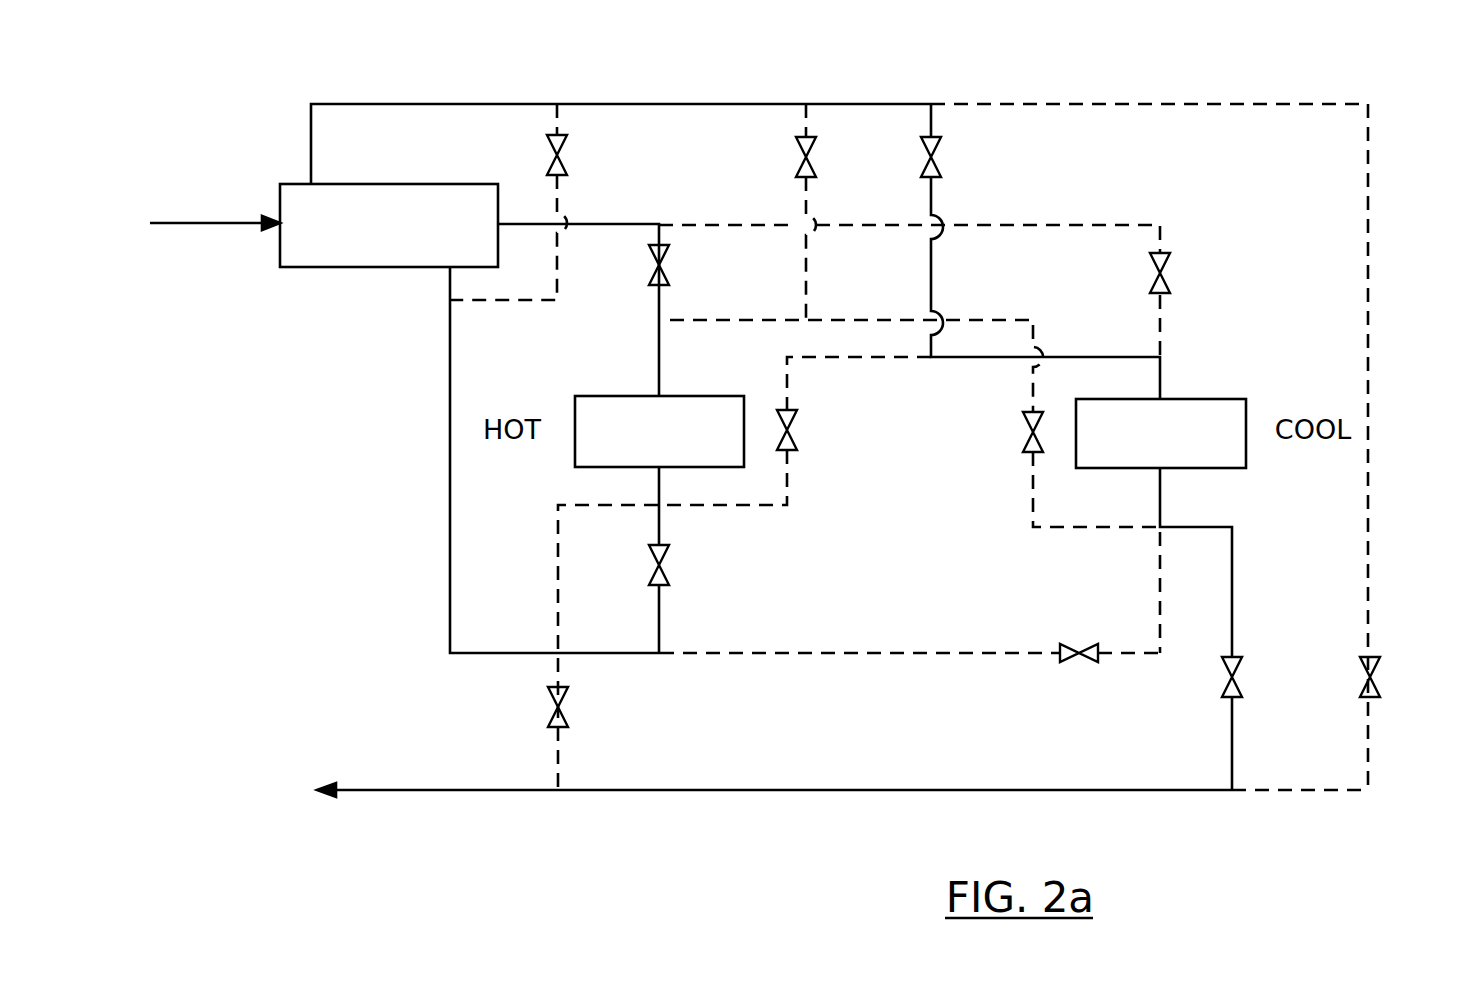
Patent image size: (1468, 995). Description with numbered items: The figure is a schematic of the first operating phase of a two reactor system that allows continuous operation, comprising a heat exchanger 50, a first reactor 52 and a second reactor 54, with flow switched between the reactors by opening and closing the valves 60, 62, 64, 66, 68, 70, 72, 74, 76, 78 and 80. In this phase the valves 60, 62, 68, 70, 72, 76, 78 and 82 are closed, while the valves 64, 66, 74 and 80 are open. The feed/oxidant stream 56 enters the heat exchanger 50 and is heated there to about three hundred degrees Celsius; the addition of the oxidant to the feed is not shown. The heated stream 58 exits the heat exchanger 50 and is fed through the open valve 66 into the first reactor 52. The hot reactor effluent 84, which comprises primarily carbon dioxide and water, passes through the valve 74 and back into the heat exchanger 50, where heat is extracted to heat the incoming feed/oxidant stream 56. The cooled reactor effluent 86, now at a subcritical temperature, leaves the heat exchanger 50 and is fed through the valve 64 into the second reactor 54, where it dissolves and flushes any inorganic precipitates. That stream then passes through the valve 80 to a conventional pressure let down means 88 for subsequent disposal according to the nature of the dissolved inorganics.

The heat exchanger 50 is at (305, 267).
The first reactor 52 is at (602, 396).
The second reactor 54 is at (1225, 399).
The feed/oxidant stream 56 is at (200, 222).
The heated stream 58 is at (647, 222).
The valve 60 is at (567, 155).
The valve 62 is at (802, 155).
The valve 64 is at (941, 160).
The valve 66 is at (669, 270).
The valve 68 is at (1170, 285).
The valve 70 is at (797, 432).
The valve 72 is at (1023, 426).
The valve 74 is at (669, 575).
The valve 76 is at (568, 718).
The valve 78 is at (1079, 646).
The valve 80 is at (1242, 683).
The valve 82 is at (1380, 683).
The hot reactor effluent 84 is at (660, 478).
The cooled reactor effluent 86 is at (492, 104).
The pressure let down means 88 is at (216, 851).